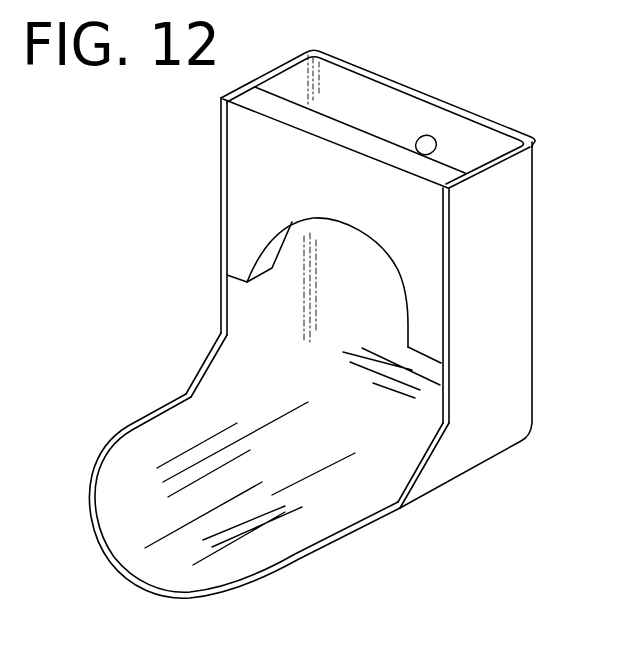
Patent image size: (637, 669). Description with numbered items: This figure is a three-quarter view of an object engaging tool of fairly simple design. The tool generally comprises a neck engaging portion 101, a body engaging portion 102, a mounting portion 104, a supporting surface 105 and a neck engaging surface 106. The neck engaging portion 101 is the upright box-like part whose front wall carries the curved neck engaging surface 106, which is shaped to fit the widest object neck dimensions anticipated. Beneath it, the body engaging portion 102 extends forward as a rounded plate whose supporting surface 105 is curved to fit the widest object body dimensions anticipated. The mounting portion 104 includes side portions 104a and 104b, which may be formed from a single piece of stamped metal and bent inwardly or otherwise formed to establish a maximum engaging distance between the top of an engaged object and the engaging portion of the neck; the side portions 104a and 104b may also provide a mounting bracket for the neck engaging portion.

The neck engaging portion 101 is at (515, 253).
The body engaging portion 102 is at (215, 600).
The mounting portion 104 is at (372, 97).
The side portion 104a is at (447, 438).
The side portion 104b is at (207, 352).
The supporting surface 105 is at (137, 513).
The neck engaging surface 106 is at (343, 227).